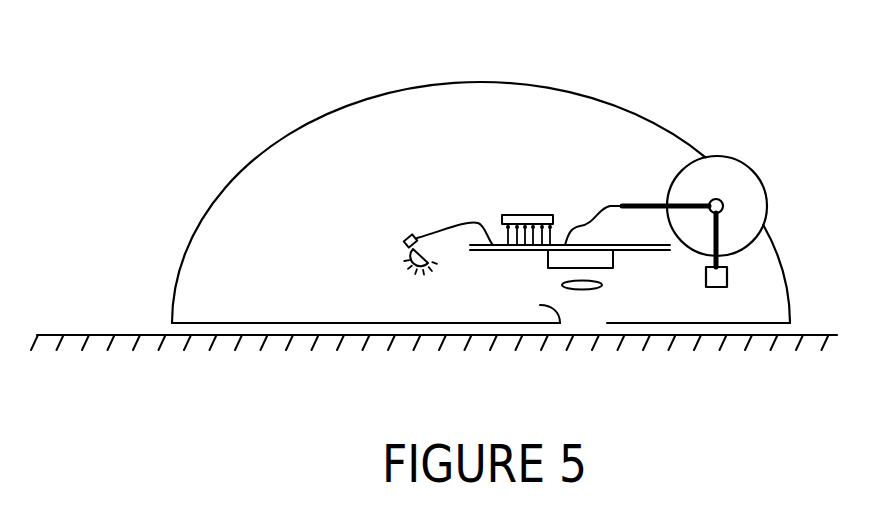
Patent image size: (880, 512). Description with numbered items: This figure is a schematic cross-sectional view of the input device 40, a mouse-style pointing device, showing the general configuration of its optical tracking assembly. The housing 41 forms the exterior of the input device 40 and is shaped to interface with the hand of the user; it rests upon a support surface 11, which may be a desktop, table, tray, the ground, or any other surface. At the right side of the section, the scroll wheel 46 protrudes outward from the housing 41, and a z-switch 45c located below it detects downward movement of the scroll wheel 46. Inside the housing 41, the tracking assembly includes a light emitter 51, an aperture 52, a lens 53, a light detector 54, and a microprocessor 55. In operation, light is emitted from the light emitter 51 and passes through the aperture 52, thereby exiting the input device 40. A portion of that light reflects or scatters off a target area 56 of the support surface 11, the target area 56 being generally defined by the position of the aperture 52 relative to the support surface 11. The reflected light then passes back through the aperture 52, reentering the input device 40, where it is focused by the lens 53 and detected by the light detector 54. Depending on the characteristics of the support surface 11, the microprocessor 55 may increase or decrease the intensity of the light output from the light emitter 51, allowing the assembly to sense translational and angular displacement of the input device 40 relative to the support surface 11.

The input device 40 is at (703, 75).
The housing 41 is at (206, 194).
The support surface 11 is at (822, 335).
The scroll wheel 46 is at (753, 170).
The z-switch 45c is at (717, 287).
The microprocessor 55 is at (528, 215).
The light emitter 51 is at (415, 233).
The light detector 54 is at (613, 260).
The lens 53 is at (603, 287).
The aperture 52 is at (537, 309).
The target area 56 is at (587, 330).